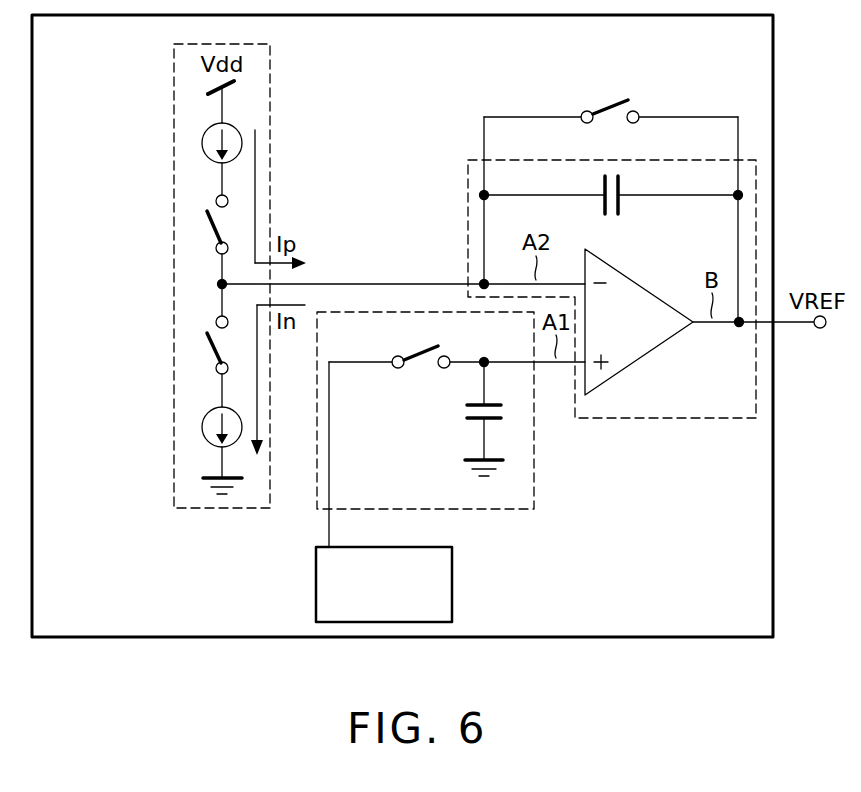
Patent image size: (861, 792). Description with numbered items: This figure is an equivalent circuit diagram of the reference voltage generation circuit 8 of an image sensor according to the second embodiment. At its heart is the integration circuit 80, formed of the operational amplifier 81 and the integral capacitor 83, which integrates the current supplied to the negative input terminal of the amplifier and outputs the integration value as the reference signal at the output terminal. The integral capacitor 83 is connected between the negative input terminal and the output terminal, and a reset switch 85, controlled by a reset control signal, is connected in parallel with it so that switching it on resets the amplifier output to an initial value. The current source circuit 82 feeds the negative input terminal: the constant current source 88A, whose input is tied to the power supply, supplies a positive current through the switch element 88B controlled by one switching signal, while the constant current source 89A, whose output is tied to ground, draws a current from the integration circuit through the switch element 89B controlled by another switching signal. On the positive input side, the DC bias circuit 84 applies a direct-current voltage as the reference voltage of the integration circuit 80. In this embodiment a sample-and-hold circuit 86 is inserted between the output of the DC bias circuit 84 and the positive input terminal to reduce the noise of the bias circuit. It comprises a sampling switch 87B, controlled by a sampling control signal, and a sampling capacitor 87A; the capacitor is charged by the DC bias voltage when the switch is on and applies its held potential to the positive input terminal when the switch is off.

The reference voltage generation circuit 8 is at (773, 543).
The integration circuit 80 is at (700, 419).
The operational amplifier 81 is at (641, 362).
The current source circuit 82 is at (270, 131).
The integral capacitor 83 is at (636, 166).
The DC bias circuit 84 is at (453, 577).
The reset switch 85 is at (670, 62).
The sample-and-hold circuit 86 is at (535, 497).
The sampling capacitor 87A is at (515, 419).
The sampling switch 87B is at (412, 383).
The constant current source 88A is at (190, 157).
The switch element 88B is at (190, 225).
The constant current source 89A is at (190, 438).
The switch element 89B is at (190, 345).